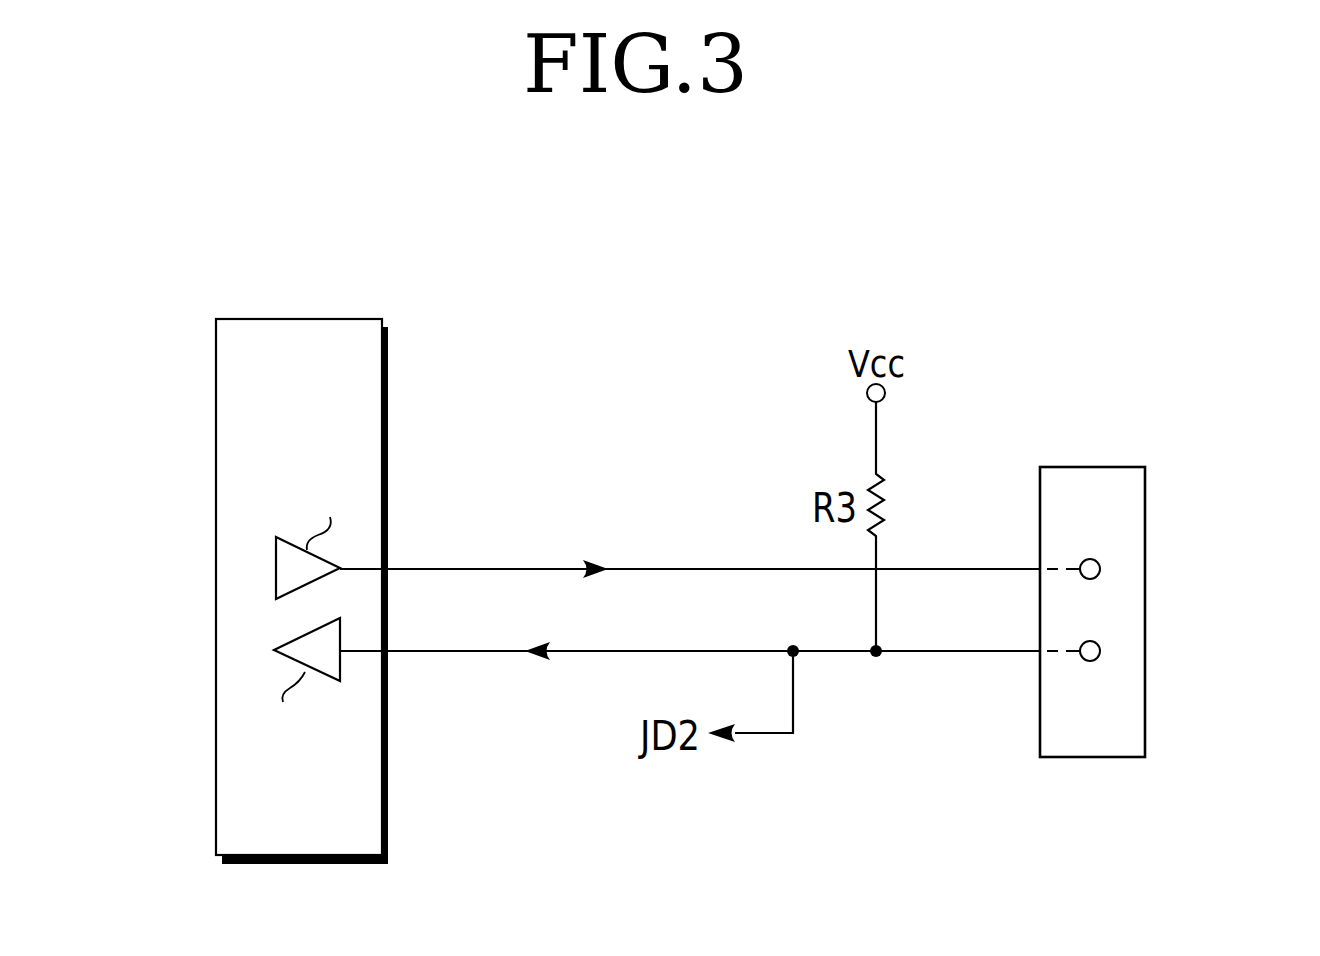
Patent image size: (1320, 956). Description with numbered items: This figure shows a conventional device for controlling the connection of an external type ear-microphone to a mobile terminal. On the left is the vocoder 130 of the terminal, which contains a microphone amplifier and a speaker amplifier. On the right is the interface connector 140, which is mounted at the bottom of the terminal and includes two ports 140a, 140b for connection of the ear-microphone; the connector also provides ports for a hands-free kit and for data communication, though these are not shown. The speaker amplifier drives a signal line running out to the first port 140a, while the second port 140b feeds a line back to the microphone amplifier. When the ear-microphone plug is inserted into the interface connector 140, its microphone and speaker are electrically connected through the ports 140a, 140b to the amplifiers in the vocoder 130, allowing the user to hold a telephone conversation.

The vocoder 130 is at (297, 318).
The interface connector 140 is at (1162, 570).
The port 140a is at (1100, 569).
The port 140b is at (1100, 651).